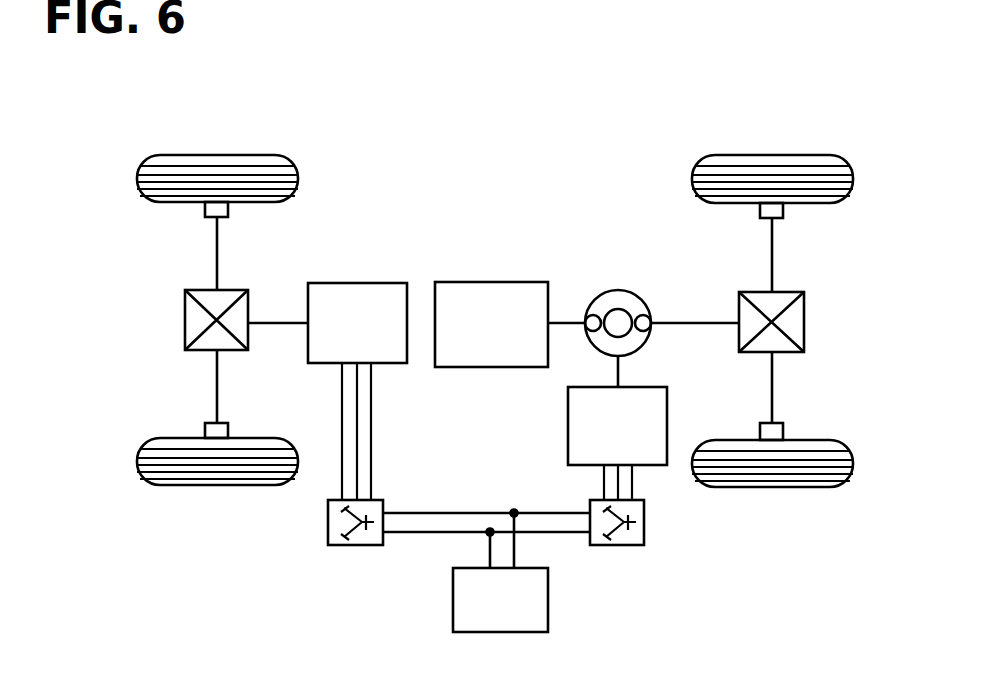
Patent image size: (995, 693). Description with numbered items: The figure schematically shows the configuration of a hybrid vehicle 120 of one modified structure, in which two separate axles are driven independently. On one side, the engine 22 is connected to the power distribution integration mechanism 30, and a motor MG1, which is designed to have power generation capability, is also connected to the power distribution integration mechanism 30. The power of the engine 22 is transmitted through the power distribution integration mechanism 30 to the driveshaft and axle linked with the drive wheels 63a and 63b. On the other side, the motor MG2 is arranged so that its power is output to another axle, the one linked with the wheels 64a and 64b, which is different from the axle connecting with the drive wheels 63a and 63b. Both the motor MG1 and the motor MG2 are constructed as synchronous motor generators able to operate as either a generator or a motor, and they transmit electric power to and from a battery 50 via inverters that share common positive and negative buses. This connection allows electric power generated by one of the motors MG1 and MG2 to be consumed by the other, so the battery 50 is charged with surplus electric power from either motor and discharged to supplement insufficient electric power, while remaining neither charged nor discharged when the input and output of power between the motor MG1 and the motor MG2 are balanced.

The hybrid vehicle 120 is at (520, 135).
The wheel 64a is at (218, 155).
The wheel 64b is at (217, 485).
The drive wheel 63a is at (771, 155).
The drive wheel 63b is at (772, 487).
The motor MG2 is at (355, 283).
The motor MG1 is at (567, 423).
The engine 22 is at (493, 280).
The power distribution integration mechanism 30 is at (615, 290).
The battery 50 is at (548, 598).